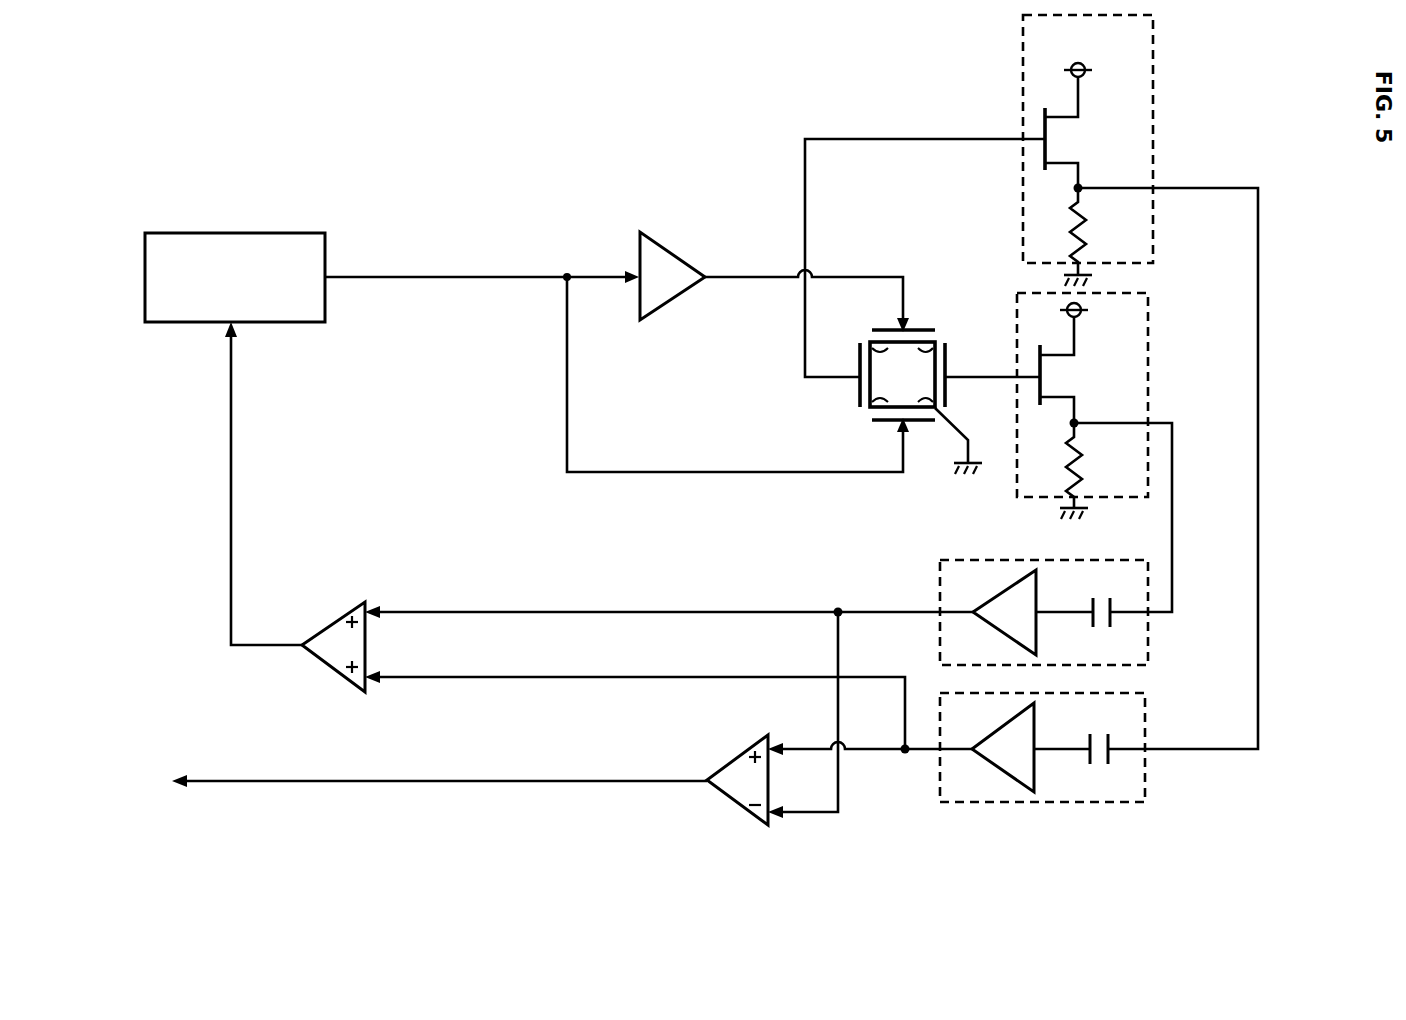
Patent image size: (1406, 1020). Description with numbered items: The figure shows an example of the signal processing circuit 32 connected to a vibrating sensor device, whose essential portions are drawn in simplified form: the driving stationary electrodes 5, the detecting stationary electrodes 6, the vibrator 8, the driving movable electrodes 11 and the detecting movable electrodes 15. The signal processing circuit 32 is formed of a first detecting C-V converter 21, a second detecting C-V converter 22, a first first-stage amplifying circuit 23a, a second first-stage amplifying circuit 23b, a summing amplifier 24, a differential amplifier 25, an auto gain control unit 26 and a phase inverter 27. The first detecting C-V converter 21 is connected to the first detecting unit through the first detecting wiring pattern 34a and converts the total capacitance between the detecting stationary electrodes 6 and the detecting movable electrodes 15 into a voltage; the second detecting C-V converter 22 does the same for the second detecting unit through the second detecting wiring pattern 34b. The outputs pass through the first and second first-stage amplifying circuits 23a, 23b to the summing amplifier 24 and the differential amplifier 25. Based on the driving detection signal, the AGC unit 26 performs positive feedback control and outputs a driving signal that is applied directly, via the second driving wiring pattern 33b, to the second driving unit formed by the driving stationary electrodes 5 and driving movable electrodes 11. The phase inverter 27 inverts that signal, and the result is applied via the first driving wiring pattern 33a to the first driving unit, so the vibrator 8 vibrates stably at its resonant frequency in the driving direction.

The signal processing circuit 32 is at (396, 124).
The auto gain control (AGC) unit 26 is at (286, 324).
The phase inverter 27 is at (638, 252).
The first driving wiring pattern 33a is at (740, 277).
The second driving wiring pattern 33b is at (575, 474).
The first detecting wiring pattern 34a is at (958, 139).
The second detecting wiring pattern 34b is at (988, 377).
The vibrator 8 is at (934, 386).
The driving stationary electrodes 5 is at (888, 327).
The driving movable electrodes 11 is at (924, 506).
The detecting movable electrodes 15 is at (822, 432).
The detecting stationary electrodes 6 is at (973, 320).
The first detecting C-V converter 21 is at (1155, 74).
The second detecting C-V converter 22 is at (1150, 328).
The first first-stage amplifying circuit 23a is at (1148, 637).
The second first-stage amplifying circuit 23b is at (1145, 780).
The summing amplifier 24 is at (337, 622).
The differential amplifier 25 is at (742, 812).